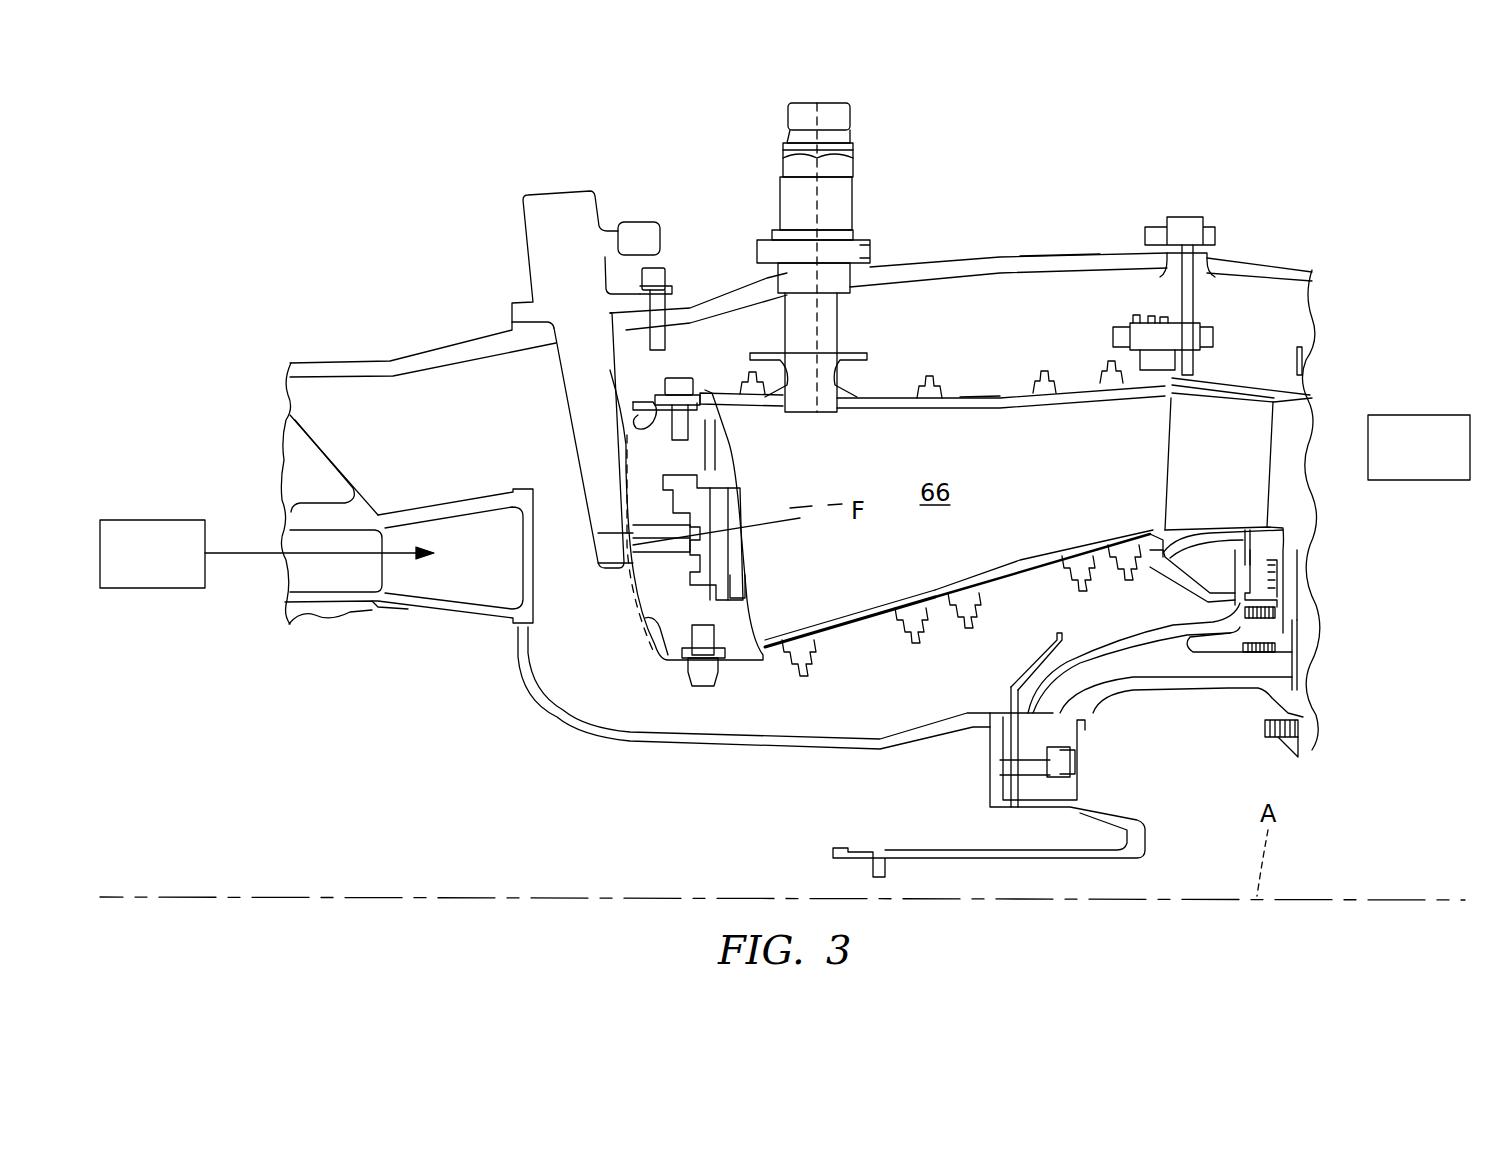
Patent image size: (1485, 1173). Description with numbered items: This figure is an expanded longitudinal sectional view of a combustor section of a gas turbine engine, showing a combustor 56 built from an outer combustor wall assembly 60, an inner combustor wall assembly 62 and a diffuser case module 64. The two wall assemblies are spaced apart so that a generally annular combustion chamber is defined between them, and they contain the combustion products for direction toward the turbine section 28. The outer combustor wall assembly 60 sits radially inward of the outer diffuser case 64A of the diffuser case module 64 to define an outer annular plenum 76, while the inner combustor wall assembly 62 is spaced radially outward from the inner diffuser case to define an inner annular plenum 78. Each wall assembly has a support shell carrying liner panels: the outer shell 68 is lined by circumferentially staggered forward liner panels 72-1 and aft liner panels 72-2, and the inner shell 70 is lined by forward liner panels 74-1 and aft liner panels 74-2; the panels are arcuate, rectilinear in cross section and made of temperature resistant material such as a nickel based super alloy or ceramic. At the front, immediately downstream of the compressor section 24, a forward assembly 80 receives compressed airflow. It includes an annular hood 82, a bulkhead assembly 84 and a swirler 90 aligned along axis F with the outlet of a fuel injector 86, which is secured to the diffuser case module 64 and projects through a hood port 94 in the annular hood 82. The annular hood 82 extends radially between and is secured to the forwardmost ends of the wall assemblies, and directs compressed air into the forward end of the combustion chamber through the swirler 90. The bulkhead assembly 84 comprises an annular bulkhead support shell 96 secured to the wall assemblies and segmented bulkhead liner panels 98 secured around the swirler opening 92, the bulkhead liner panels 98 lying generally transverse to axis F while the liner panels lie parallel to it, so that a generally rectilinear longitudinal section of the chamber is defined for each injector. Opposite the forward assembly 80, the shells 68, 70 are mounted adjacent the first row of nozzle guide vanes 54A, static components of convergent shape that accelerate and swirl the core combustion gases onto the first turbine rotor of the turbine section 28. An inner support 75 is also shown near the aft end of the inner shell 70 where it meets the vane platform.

The compressor section 24 is at (168, 567).
The turbine section 28 is at (1433, 460).
The nozzle guide vanes 54A is at (1245, 473).
The combustor 56 is at (1094, 156).
The outer combustor wall assembly 60 is at (991, 385).
The inner combustor wall assembly 62 is at (930, 618).
The diffuser case module 64 is at (986, 254).
The outer diffuser case 64A is at (1058, 258).
The outer support shell 68 is at (958, 396).
The inner support shell 70 is at (1027, 573).
The forward liner panels 72-1 is at (858, 412).
The aft liner panels 72-2 is at (1085, 404).
The forward liner panels 74-1 is at (882, 569).
The aft liner panels 74-2 is at (1028, 526).
The inner support 75 is at (1123, 573).
The outer annular plenum 76 is at (926, 325).
The inner annular plenum 78 is at (899, 713).
The forward assembly 80 is at (648, 668).
The annular hood 82 is at (650, 636).
The bulkhead assembly 84 is at (732, 463).
The fuel injector 86 is at (591, 330).
The swirler 90 is at (752, 565).
The swirler opening 92 is at (739, 491).
The hood port 94 is at (636, 606).
The bulkhead support shell 96 is at (653, 660).
The bulkhead liner panels 98 is at (750, 595).